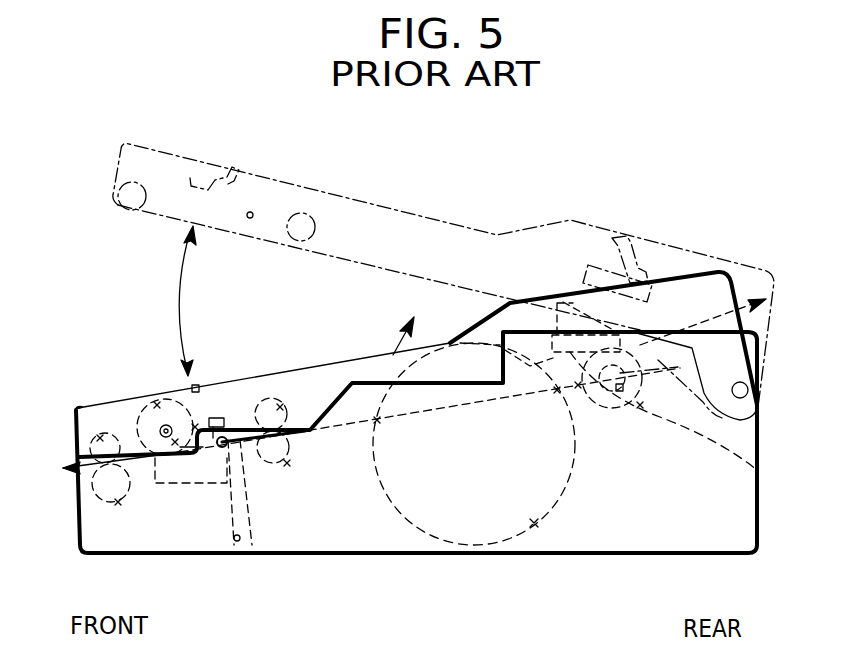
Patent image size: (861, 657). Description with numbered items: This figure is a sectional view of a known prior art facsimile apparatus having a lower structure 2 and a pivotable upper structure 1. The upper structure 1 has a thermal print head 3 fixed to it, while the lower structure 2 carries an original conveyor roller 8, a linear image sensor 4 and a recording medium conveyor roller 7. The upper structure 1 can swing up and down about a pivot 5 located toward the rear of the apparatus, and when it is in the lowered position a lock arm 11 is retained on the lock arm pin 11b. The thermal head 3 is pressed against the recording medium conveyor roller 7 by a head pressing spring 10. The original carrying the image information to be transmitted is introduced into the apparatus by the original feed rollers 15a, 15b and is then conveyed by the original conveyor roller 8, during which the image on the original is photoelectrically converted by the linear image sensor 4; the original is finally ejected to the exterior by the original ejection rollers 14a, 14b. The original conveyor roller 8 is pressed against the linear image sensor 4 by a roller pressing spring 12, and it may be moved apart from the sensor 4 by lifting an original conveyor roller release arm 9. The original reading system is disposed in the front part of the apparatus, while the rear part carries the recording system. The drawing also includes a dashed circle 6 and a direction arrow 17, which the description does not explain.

The upper structure 1 is at (435, 238).
The lower structure 2 is at (391, 540).
The thermal print head 3 is at (555, 325).
The linear image sensor 4 is at (208, 484).
The pivot 5 is at (749, 393).
The gear 6 is at (534, 523).
The recording medium conveyor roller 7 is at (757, 468).
The original conveyor roller 8 is at (150, 398).
The original conveyor roller release arm 9 is at (165, 440).
The head pressing spring 10 is at (555, 325).
The lock arm 11 is at (244, 545).
The lock arm pin 11b is at (227, 430).
The roller pressing spring 12 is at (196, 390).
The original ejection roller 14a is at (128, 490).
The original ejection roller 14b is at (103, 437).
The original feed roller 15a is at (290, 465).
The original feed roller 15b is at (284, 400).
The direction of movement 17 is at (387, 362).